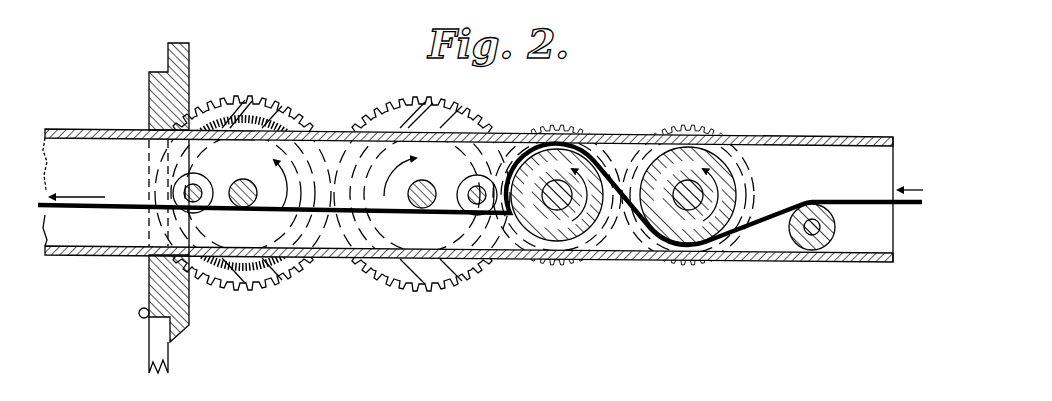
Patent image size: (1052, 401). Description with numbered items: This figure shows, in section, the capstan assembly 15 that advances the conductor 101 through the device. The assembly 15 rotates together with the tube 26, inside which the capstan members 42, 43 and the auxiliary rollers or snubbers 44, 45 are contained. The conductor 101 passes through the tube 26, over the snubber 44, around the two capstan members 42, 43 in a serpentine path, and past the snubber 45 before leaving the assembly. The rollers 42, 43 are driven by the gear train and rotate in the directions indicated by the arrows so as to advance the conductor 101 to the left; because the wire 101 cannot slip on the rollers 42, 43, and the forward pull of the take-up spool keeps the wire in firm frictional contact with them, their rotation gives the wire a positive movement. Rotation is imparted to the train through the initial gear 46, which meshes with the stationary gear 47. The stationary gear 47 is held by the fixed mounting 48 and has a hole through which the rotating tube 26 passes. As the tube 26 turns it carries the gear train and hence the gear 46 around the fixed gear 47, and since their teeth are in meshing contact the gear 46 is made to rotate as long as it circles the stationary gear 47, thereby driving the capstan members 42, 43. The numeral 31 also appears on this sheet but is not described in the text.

The tube 26 is at (837, 138).
The stationary gear 47 is at (178, 90).
The mounting 48 is at (168, 353).
The initial gear 46 is at (278, 128).
The auxiliary roller or snubber 44 is at (487, 212).
The capstan member 42 is at (556, 232).
The capstan member 43 is at (681, 234).
The auxiliary roller or snubber 45 is at (807, 250).
The conductor 101 is at (840, 205).
The capstan assembly 15 is at (640, 270).
The feed unit 31 is at (551, 386).